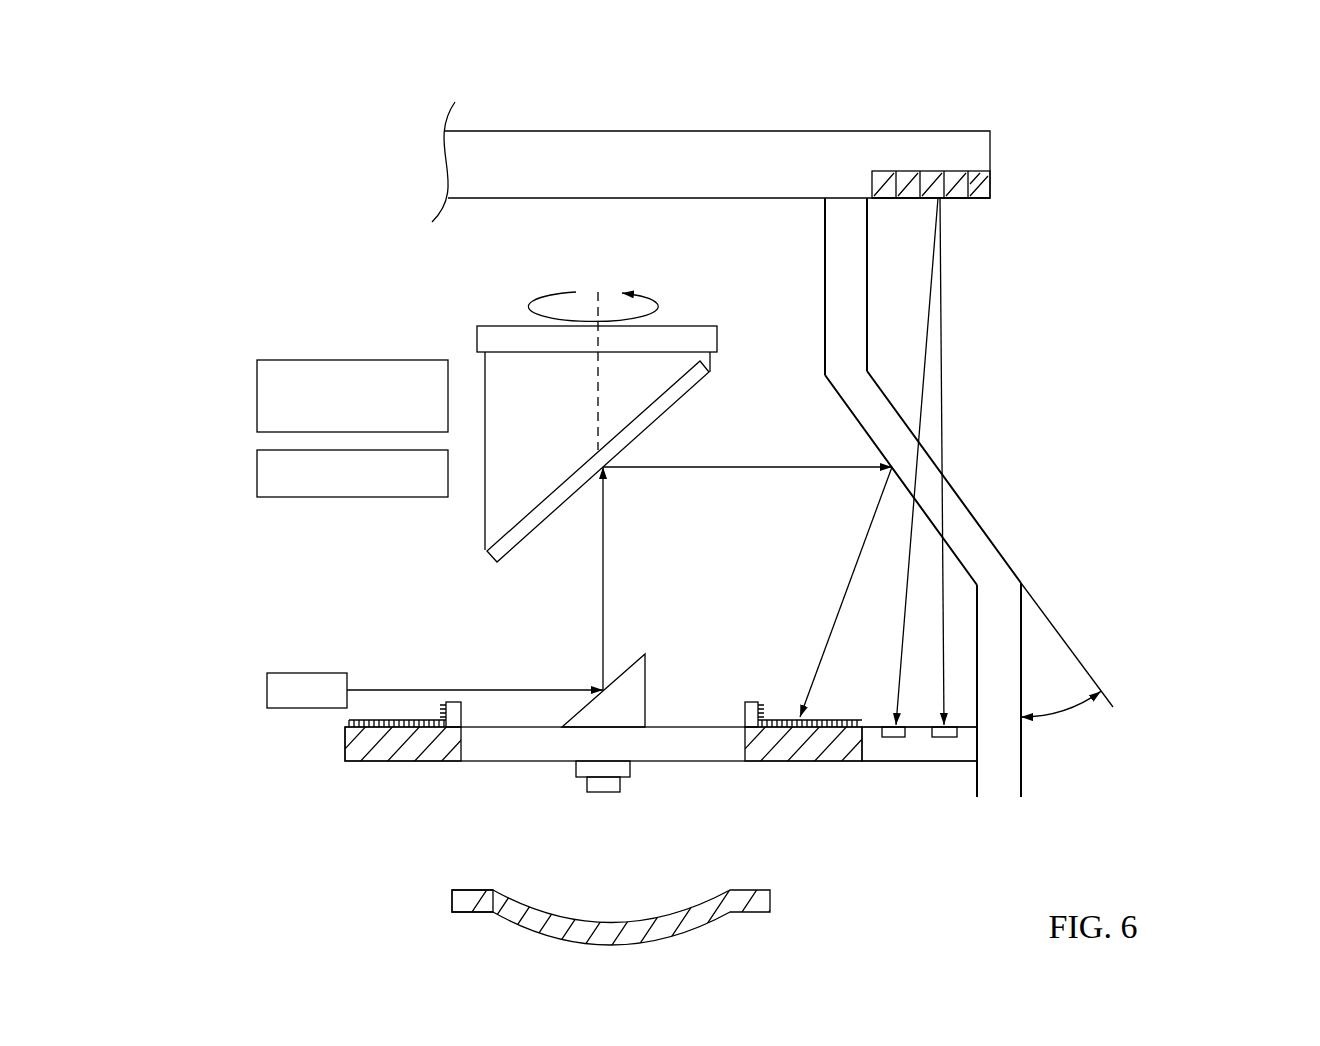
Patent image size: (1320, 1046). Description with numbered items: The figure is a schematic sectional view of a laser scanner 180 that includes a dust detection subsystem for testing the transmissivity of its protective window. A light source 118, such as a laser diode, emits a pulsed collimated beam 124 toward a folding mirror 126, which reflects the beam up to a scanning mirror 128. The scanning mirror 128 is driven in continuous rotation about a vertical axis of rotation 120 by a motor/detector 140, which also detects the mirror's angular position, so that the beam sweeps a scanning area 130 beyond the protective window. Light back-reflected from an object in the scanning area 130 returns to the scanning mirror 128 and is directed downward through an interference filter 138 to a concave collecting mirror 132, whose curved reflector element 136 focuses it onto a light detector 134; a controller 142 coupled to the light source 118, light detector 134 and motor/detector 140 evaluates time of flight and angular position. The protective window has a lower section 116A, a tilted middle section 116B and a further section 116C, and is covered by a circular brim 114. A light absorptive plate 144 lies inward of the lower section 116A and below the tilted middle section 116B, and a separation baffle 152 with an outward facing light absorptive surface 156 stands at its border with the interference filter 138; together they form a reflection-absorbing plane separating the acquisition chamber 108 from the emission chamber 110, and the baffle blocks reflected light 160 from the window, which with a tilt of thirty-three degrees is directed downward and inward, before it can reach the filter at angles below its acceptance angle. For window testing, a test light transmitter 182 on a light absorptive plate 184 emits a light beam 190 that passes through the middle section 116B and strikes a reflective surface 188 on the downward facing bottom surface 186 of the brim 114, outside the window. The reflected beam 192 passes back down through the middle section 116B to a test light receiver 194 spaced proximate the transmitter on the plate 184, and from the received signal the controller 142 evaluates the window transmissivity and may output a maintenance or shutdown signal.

The acquisition chamber 108 is at (349, 817).
The emission chamber 110 is at (307, 558).
The brim 114 is at (708, 130).
The lower section of the protective window 116A is at (825, 296).
The tilted middle section of the protective window 116B is at (968, 507).
The section of the protective window 116C is at (1022, 625).
The light source 118 is at (305, 681).
The vertical axis of rotation 120 is at (600, 296).
The collimated beam 124 is at (502, 690).
The folding mirror 126 is at (630, 692).
The scanning mirror 128 is at (695, 392).
The scanning area 130 is at (1137, 423).
The collecting mirror 132 is at (487, 905).
The light detector 134 is at (612, 767).
The lens 136 is at (610, 921).
The interference filter 138 is at (523, 752).
The motor/detector 140 is at (257, 395).
The controller 142 is at (257, 470).
The light absorptive plate 144 is at (355, 745).
The separation baffle 152 is at (452, 707).
The light absorptive surface 156 is at (443, 712).
The reflected light 160 is at (838, 596).
The laser scanner 180 is at (1117, 103).
The test light transmitter 182 is at (888, 742).
The light absorptive plate 184 is at (915, 757).
The bottom surface of the brim 186 is at (968, 200).
The reflective surface 188 is at (985, 172).
The light beam 190 is at (903, 608).
The reflected beam 192 is at (943, 429).
The test light receiver 194 is at (948, 742).